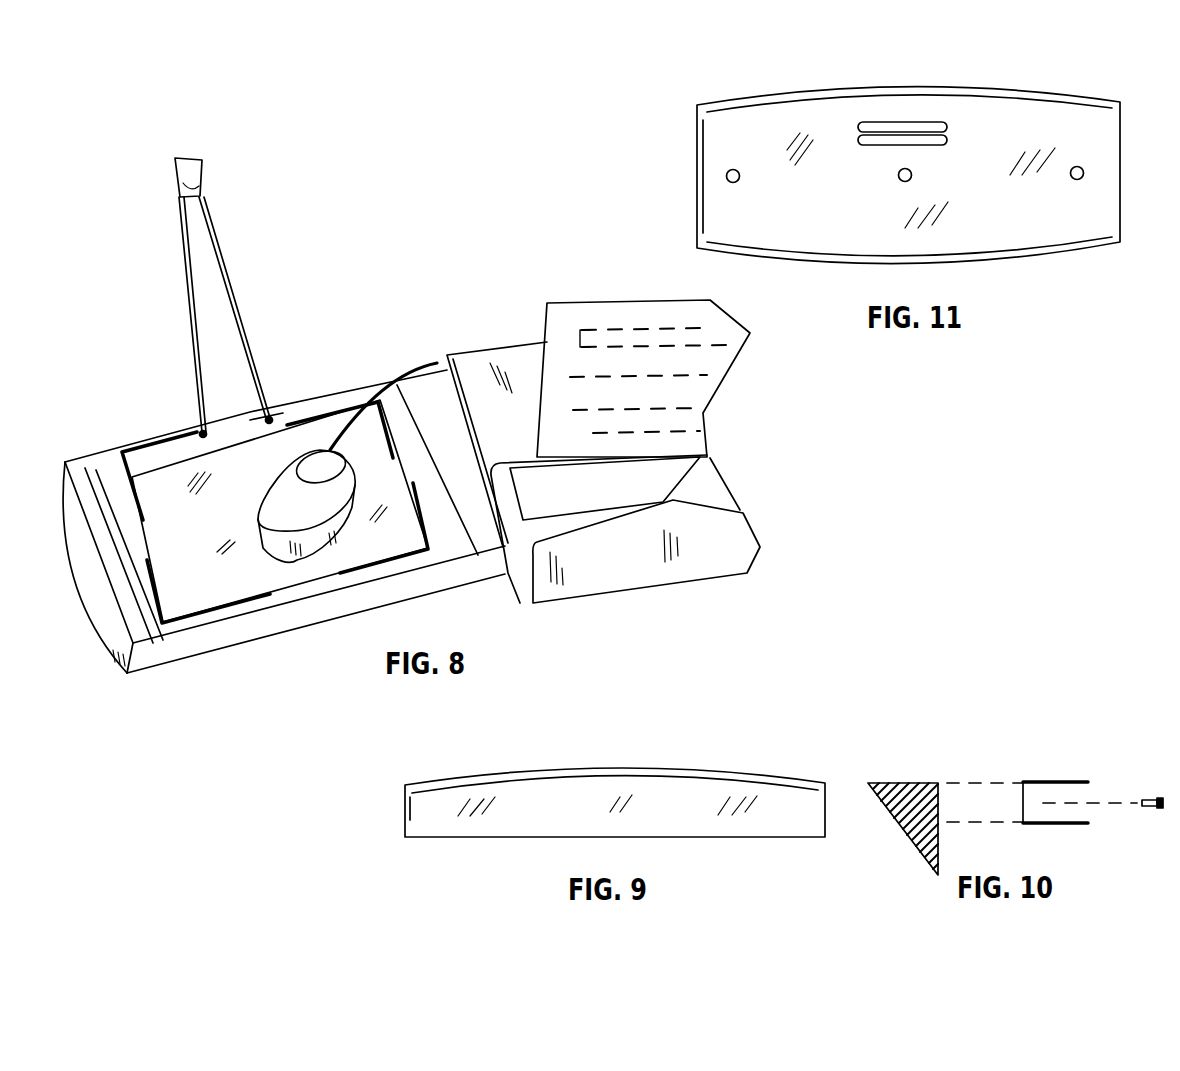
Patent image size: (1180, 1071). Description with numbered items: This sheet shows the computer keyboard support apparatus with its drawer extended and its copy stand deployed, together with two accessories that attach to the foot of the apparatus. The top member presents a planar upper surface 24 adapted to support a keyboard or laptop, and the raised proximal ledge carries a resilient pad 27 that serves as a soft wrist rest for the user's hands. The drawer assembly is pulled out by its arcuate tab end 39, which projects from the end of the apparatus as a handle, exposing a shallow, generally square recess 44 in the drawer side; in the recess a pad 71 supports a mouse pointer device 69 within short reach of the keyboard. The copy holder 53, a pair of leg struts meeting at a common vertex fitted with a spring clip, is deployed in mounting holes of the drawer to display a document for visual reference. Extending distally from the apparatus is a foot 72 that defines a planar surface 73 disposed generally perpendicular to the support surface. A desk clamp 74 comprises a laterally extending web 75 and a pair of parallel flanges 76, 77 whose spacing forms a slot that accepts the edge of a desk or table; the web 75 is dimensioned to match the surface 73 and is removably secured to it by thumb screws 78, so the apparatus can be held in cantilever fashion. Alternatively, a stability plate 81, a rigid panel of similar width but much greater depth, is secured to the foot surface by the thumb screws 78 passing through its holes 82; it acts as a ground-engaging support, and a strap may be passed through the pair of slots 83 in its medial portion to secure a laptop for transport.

In FIG. 8, the planar upper surface 24 is at (516, 358).
In FIG. 8, the resilient pad 27 is at (573, 493).
In FIG. 8, the tab end 39 is at (90, 633).
In FIG. 8, the recess 44 is at (145, 457).
In FIG. 8, the copy holder 53 is at (243, 300).
In FIG. 8, the mouse pointer device 69 is at (298, 492).
In FIG. 8, the pad 71 is at (220, 565).
In FIG. 10, the foot 72 is at (910, 802).
In FIG. 10, the planar surface 73 is at (938, 810).
In FIG. 9, the desk clamp 74 is at (707, 798).
In FIG. 10, the web 75 is at (1022, 795).
In FIG. 10, the flange 76 is at (1072, 780).
In FIG. 10, the flange 77 is at (1080, 825).
In FIG. 10, the thumb screw 78 is at (1150, 797).
In FIG. 11, the stability plate 81 is at (1010, 222).
In FIG. 11, the hole 82 is at (725, 175).
In FIG. 11, the slot 83 is at (875, 133).